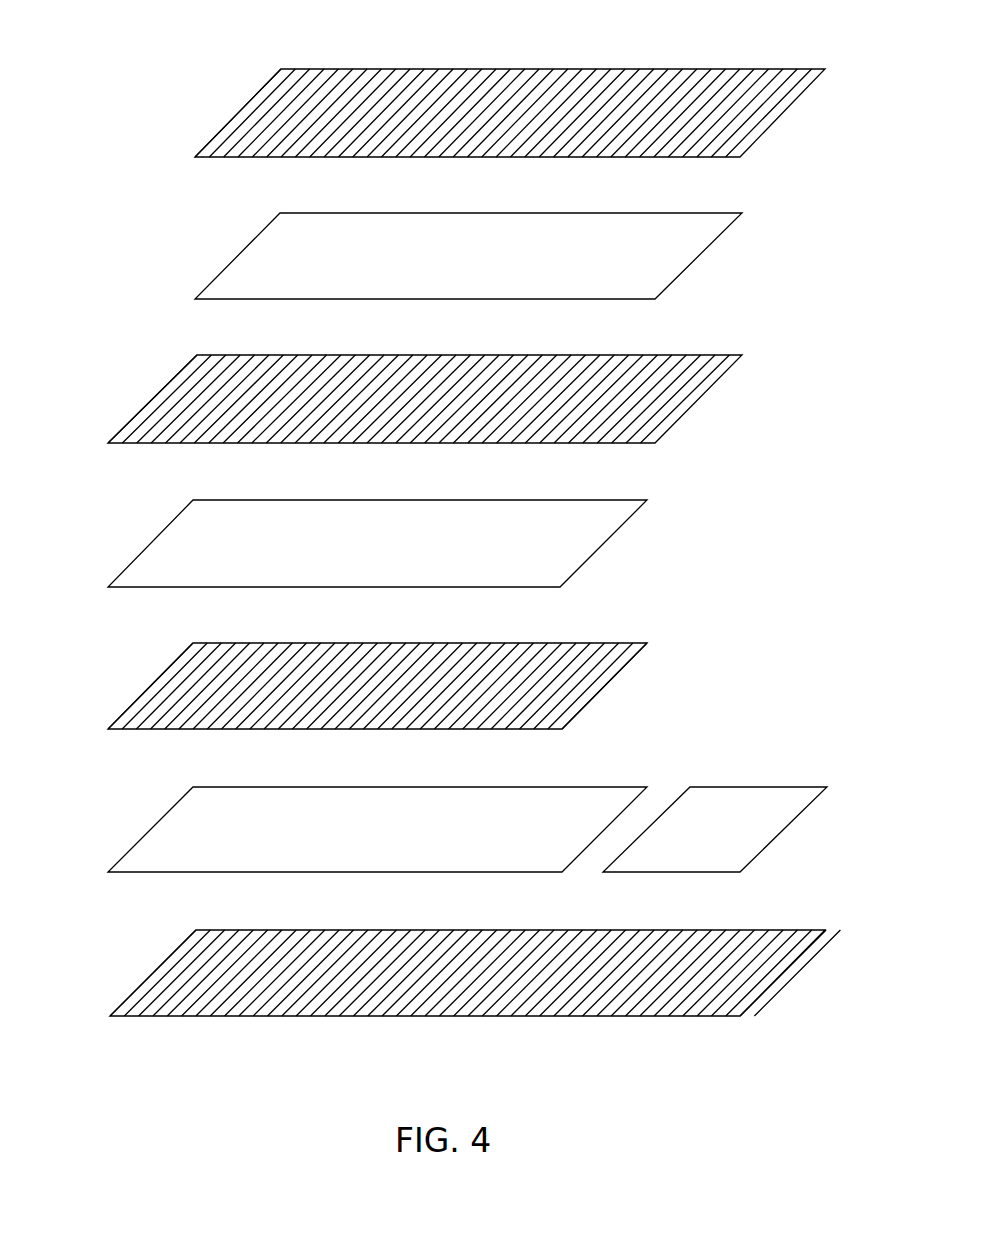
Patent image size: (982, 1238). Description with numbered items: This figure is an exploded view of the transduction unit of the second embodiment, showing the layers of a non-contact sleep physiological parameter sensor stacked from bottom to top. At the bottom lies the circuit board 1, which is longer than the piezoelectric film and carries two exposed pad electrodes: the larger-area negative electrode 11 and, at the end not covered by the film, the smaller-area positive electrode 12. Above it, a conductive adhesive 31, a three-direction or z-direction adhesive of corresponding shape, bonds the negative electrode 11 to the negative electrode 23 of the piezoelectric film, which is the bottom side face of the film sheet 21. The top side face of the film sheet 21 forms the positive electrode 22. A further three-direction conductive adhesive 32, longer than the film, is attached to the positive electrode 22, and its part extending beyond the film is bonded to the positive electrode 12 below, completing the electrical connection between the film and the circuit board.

The circuit board 1 is at (155, 1013).
The negative electrode of the circuit board 11 is at (190, 855).
The positive electrode of the circuit board 12 is at (737, 843).
The film sheet 21 is at (172, 410).
The positive electrode of the piezoelectric film 22 is at (245, 275).
The negative electrode of the piezoelectric film 23 is at (168, 557).
The conductive adhesive 31 is at (158, 712).
The conductive adhesive 32 is at (288, 92).